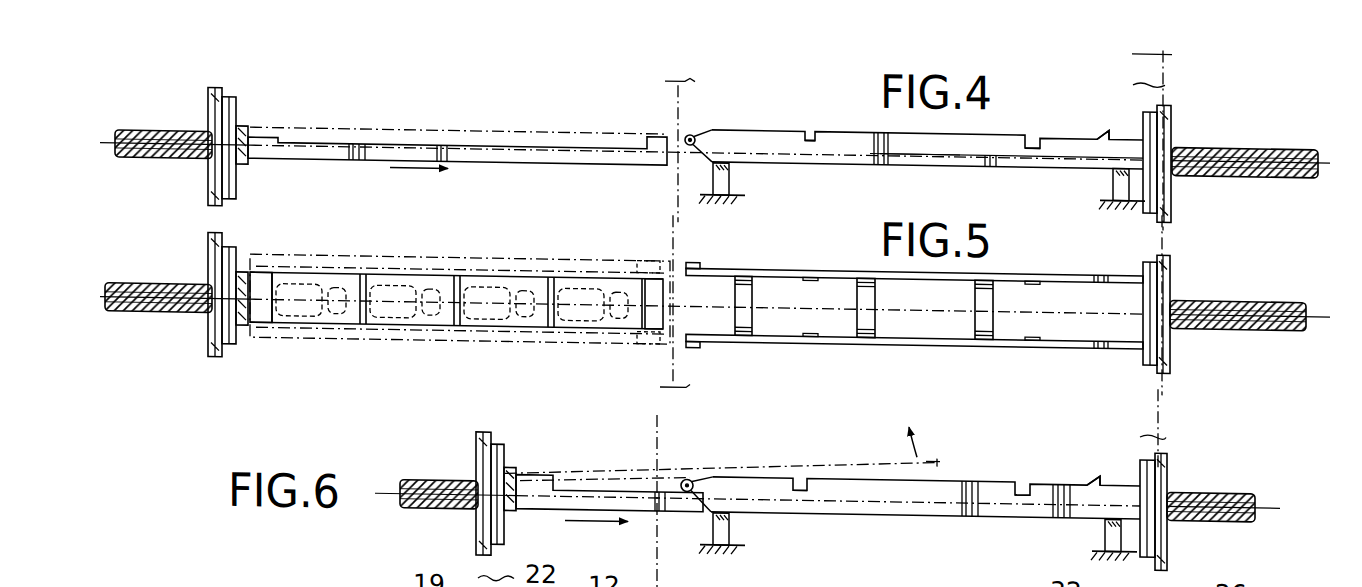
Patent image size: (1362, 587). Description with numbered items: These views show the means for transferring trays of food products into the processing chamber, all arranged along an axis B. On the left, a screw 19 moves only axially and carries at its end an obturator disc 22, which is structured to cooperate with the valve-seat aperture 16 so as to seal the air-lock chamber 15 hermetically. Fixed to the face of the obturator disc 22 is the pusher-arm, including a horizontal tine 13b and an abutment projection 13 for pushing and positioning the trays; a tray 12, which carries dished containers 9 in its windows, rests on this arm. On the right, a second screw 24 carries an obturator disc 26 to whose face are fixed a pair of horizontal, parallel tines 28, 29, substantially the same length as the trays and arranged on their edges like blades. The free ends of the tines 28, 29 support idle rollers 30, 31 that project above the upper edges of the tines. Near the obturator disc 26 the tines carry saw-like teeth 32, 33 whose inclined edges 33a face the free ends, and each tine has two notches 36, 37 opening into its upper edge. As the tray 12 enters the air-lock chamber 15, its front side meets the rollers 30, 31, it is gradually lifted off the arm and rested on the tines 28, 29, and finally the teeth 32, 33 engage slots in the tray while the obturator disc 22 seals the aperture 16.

In FIG. 5, the dished container 9 is at (430, 271).
In FIG. 4, the tray 12 is at (440, 121).
In FIG. 5, the tray 12 is at (345, 254).
In FIG. 6, the tray 12 is at (733, 448).
In FIG. 4, the abutment projection 13 is at (243, 124).
In FIG. 5, the abutment projection 13 is at (246, 321).
In FIG. 4, the tine 13b is at (507, 145).
In FIG. 6, the tine 13b is at (683, 494).
In FIG. 4, the air-lock chamber 15 is at (1165, 66).
In FIG. 6, the air-lock chamber 15 is at (1153, 429).
In FIG. 4, the first circular aperture 16 is at (676, 101).
In FIG. 5, the first circular aperture 16 is at (675, 301).
In FIG. 4, the screw 19 is at (205, 125).
In FIG. 5, the screw 19 is at (170, 280).
In FIG. 6, the screw 19 is at (425, 471).
In FIG. 4, the obturator disc 22 is at (230, 179).
In FIG. 5, the obturator disc 22 is at (222, 241).
In FIG. 6, the obturator disc 22 is at (498, 438).
In FIG. 4, the screw 24 is at (1262, 129).
In FIG. 5, the screw 24 is at (1255, 279).
In FIG. 6, the screw 24 is at (1232, 476).
In FIG. 4, the obturator disc 26 is at (1163, 126).
In FIG. 5, the obturator disc 26 is at (1166, 264).
In FIG. 6, the obturator disc 26 is at (1167, 460).
In FIG. 5, the tine 28 is at (893, 295).
In FIG. 4, the tine 29 is at (998, 146).
In FIG. 5, the tine 29 is at (925, 330).
In FIG. 6, the tine 29 is at (870, 491).
In FIG. 5, the idle roller 30 is at (694, 253).
In FIG. 4, the idle roller 31 is at (695, 123).
In FIG. 5, the idle roller 31 is at (694, 331).
In FIG. 6, the idle roller 31 is at (690, 466).
In FIG. 5, the tooth 32 is at (1100, 257).
In FIG. 4, the tooth 33 is at (1097, 110).
In FIG. 5, the tooth 33 is at (1105, 329).
In FIG. 6, the inclined edge 33a is at (1100, 460).
In FIG. 4, the notch 36 is at (803, 137).
In FIG. 5, the notch 36 is at (810, 256).
In FIG. 6, the notch 36 is at (800, 484).
In FIG. 4, the notch 37 is at (1035, 133).
In FIG. 5, the notch 37 is at (1032, 253).
In FIG. 6, the notch 37 is at (1022, 463).
In FIG. 4, the axis B is at (952, 141).